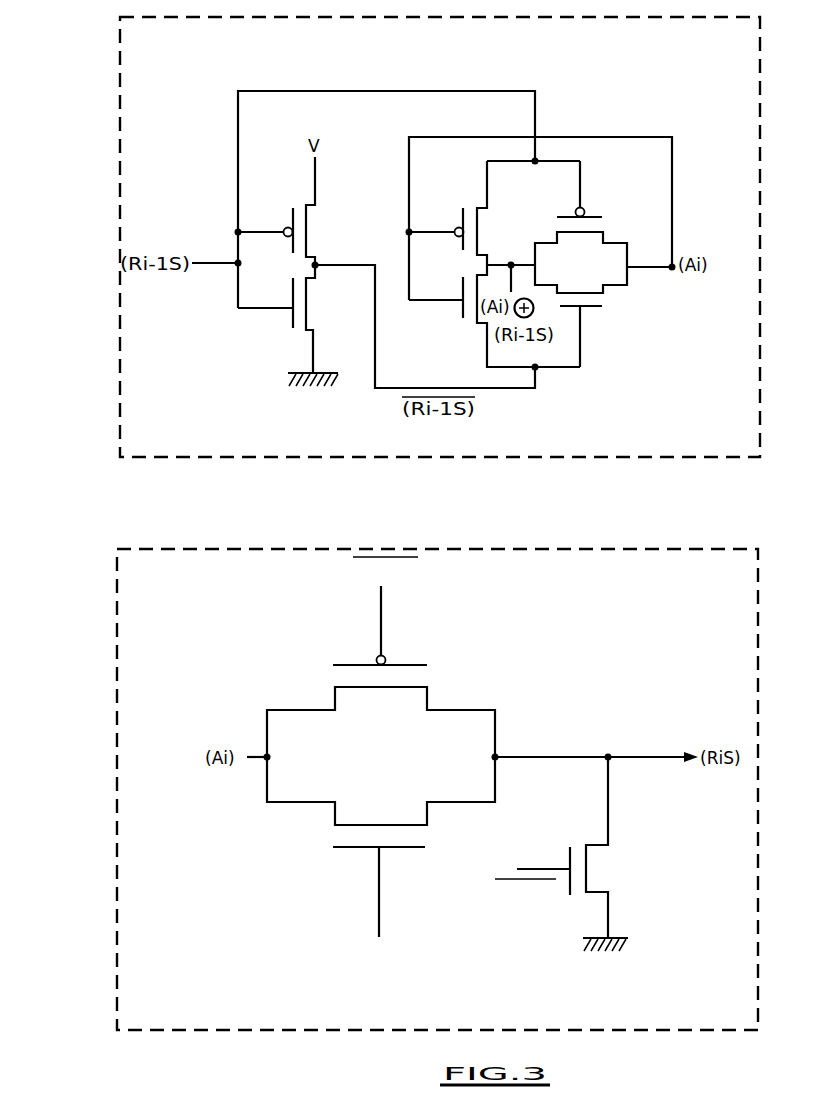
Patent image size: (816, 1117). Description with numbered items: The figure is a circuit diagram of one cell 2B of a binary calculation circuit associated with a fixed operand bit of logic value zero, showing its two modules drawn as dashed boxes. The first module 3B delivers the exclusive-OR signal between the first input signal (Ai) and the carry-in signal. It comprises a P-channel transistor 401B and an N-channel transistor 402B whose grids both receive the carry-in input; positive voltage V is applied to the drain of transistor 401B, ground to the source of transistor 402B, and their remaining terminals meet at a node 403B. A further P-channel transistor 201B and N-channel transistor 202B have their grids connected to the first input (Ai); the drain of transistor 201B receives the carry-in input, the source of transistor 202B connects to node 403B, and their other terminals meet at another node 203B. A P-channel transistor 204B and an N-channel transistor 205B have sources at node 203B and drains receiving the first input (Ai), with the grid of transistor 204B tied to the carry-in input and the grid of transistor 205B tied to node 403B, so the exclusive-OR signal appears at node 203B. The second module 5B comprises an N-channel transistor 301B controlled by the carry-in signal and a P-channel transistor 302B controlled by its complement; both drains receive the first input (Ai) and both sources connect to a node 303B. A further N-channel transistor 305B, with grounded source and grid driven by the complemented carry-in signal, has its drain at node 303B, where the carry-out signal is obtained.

The first module 3B is at (120, 362).
The cell 2B is at (116, 513).
The second module 5B is at (117, 900).
The P-channel transistor 401B is at (288, 228).
The N-channel transistor 402B is at (291, 311).
The node 403B is at (367, 242).
The P-channel transistor 201B is at (458, 228).
The N-channel transistor 202B is at (459, 306).
The node 203B is at (520, 258).
The P-channel transistor 204B is at (602, 223).
The N-channel transistor 205B is at (604, 294).
The N-channel transistor 301B is at (344, 833).
The P-channel transistor 302B is at (432, 678).
The node 303B is at (608, 756).
The N-channel transistor 305B is at (595, 845).